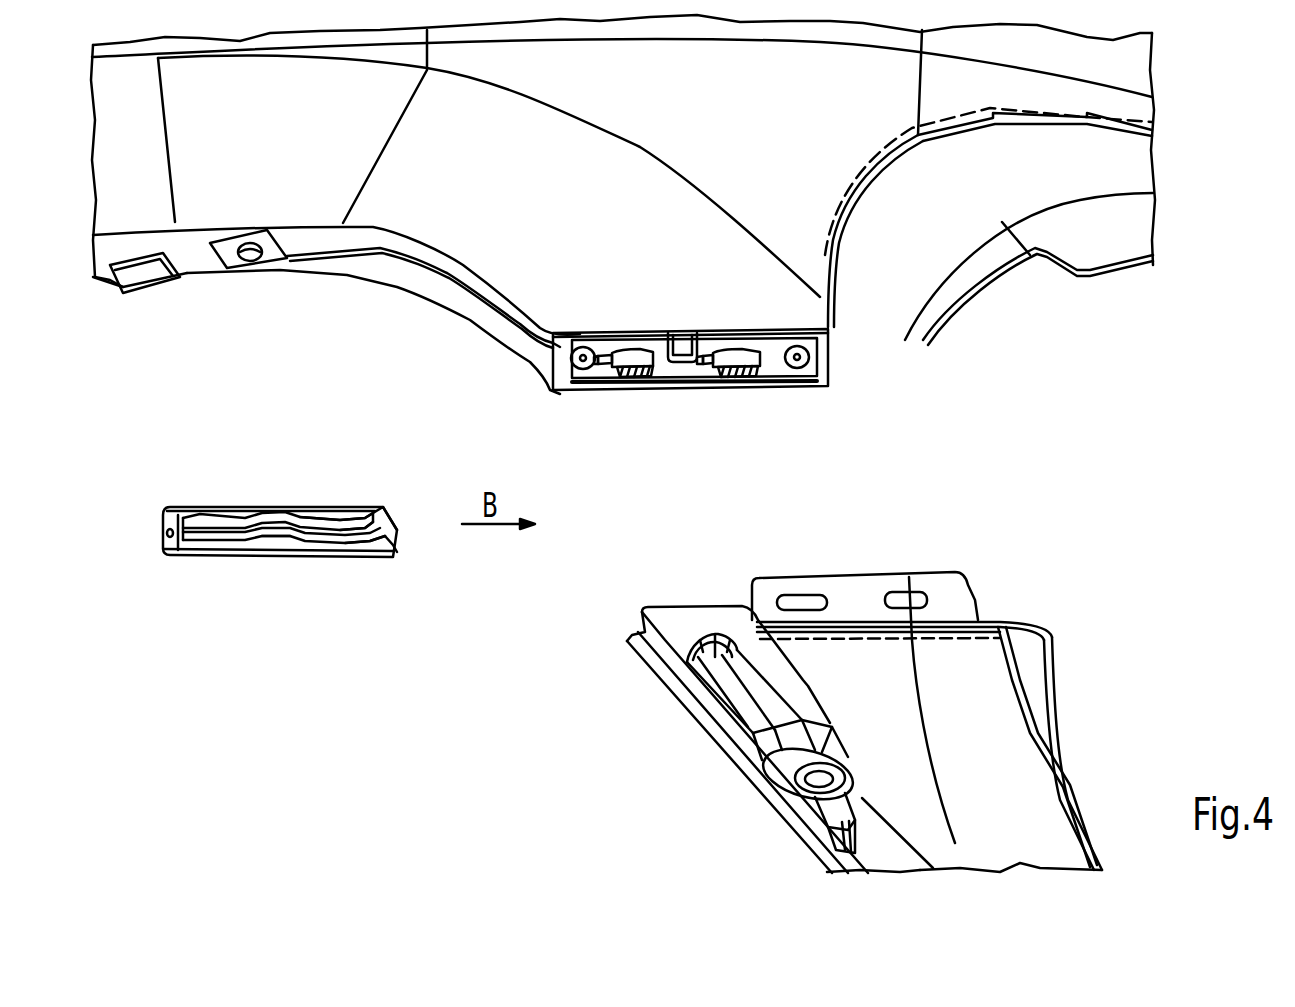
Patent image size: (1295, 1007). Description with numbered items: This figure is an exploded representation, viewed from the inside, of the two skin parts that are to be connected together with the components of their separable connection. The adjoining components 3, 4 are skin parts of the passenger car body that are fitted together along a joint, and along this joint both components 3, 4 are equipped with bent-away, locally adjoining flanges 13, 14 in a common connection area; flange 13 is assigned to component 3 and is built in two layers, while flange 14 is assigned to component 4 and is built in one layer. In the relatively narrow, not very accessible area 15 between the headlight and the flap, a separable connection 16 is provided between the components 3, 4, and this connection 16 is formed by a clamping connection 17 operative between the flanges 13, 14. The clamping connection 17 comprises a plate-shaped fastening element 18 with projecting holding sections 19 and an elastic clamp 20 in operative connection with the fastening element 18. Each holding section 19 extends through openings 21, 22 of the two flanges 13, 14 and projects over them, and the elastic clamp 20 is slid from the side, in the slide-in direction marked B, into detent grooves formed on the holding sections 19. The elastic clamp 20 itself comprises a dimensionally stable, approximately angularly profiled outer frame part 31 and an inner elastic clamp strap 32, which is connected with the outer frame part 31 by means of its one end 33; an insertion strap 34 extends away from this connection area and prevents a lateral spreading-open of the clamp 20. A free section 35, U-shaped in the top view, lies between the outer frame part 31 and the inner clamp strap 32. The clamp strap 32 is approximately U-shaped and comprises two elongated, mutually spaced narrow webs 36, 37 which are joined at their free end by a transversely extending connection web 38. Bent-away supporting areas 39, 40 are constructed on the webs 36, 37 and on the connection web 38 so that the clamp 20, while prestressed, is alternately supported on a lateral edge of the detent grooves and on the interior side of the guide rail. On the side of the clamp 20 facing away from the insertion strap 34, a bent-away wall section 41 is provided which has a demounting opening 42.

The component 3 is at (997, 715).
The component 4 is at (498, 267).
The flange 13 is at (962, 585).
The flange 14 is at (762, 335).
The area 15 is at (730, 416).
The separable connection 16 is at (618, 553).
The clamping connection 17 is at (535, 451).
The fastening element 18 is at (773, 363).
The holding section 19 is at (620, 392).
The elastic clamp 20 is at (271, 563).
The opening 21 is at (632, 350).
The opening 22 is at (807, 600).
The outer frame part 31 is at (300, 557).
The clamp strap 32 is at (197, 518).
The end 33 is at (382, 508).
The insertion strap 34 is at (397, 552).
The free section 35 is at (240, 517).
The web 36 is at (337, 525).
The web 37 is at (347, 545).
The connection web 38 is at (197, 543).
The supporting area 39 is at (280, 537).
The supporting area 40 is at (243, 540).
The wall section 41 is at (163, 548).
The demounting opening 42 is at (163, 537).